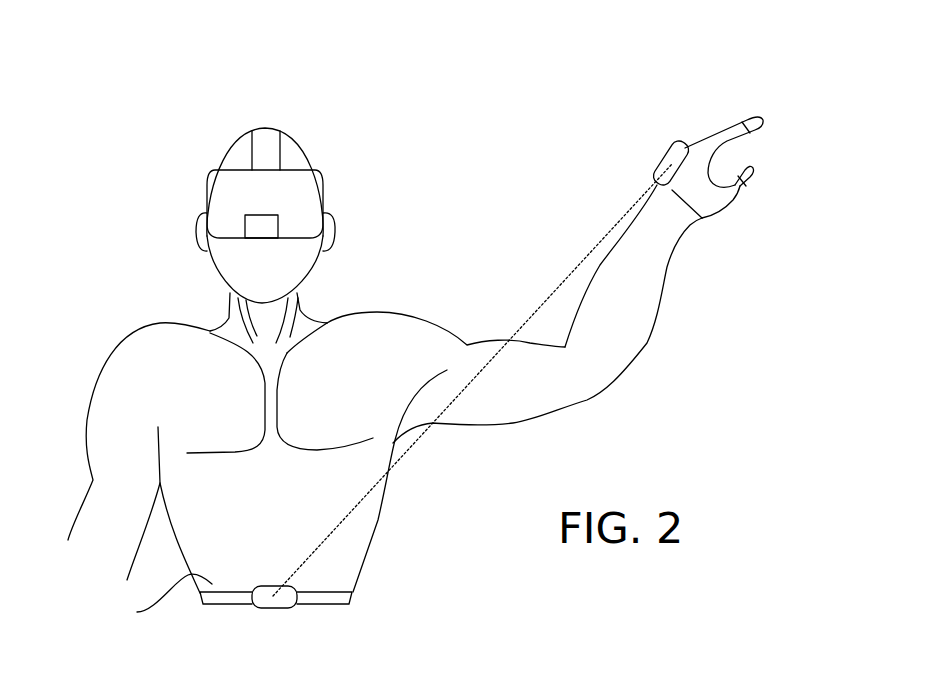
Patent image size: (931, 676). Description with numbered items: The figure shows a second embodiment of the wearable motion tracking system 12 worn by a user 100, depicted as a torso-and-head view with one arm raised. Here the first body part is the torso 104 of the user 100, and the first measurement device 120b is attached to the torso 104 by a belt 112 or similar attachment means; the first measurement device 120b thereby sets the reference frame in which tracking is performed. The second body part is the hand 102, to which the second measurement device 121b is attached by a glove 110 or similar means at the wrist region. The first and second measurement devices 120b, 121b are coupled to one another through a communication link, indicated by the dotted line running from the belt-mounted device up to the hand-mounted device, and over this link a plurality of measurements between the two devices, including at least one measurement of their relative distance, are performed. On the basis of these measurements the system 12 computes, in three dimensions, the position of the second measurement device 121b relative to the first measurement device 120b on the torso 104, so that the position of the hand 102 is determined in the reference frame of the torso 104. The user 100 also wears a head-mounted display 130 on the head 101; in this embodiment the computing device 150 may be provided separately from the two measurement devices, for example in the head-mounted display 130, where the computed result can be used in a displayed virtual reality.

The wearable motion tracking system 12 is at (186, 78).
The user 100 is at (391, 312).
The head 101 is at (306, 152).
The hand 102 is at (757, 113).
The torso 104 is at (137, 612).
The glove 110 is at (722, 127).
The belt 112 is at (353, 600).
The first measurement device 120b is at (270, 587).
The second measurement device 121b is at (665, 155).
The head-mounted display 130 is at (207, 193).
The computing device 150 is at (252, 225).